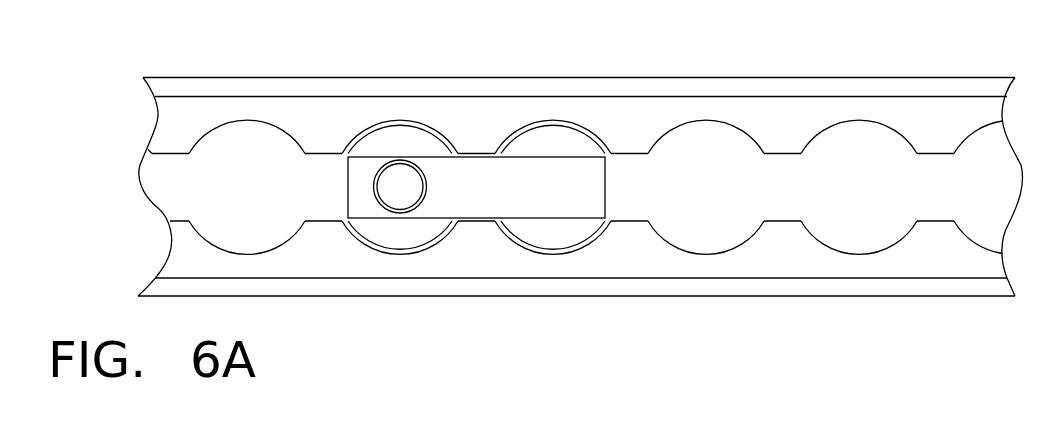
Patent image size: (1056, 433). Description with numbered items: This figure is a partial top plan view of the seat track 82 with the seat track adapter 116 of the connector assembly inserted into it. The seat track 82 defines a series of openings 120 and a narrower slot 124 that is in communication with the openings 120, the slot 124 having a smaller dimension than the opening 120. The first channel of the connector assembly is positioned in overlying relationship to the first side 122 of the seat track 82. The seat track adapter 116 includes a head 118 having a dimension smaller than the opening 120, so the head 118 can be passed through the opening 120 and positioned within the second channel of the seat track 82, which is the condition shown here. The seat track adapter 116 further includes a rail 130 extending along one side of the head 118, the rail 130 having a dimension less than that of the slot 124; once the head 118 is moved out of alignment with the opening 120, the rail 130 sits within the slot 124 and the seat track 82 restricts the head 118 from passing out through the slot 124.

The seat track 82 is at (779, 115).
The seat track adapter 116 is at (473, 172).
The head 118 is at (390, 137).
The opening 120 is at (415, 118).
The first side 122 is at (348, 270).
The slot 124 is at (478, 222).
The rail 130 is at (572, 173).